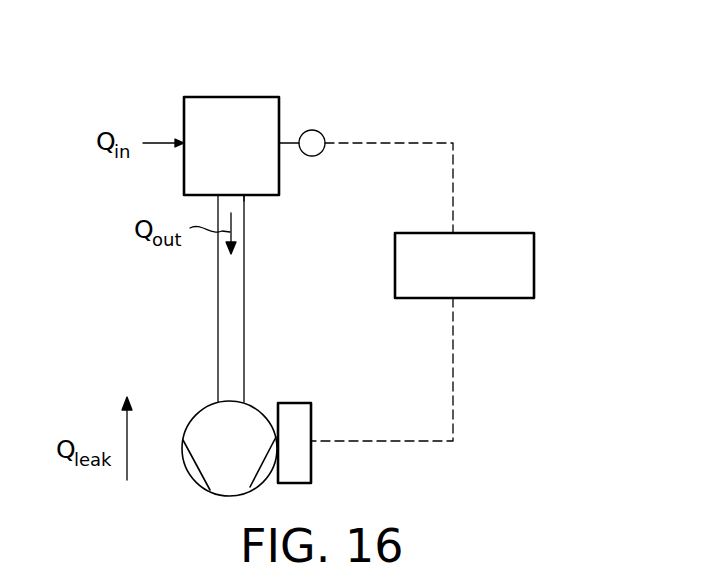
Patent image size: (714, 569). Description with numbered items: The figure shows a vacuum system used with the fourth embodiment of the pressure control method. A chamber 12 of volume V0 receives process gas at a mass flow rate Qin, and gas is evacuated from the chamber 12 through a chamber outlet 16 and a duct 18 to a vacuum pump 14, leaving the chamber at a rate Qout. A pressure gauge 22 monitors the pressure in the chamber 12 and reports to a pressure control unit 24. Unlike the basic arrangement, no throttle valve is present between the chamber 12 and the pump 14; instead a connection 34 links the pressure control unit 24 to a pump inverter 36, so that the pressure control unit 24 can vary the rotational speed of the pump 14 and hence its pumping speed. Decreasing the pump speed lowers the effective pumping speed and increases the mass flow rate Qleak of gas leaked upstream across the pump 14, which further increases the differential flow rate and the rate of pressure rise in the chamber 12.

The chamber 12 is at (229, 97).
The vacuum pump 14 is at (192, 473).
The chamber outlet 16 is at (256, 196).
The duct 18 is at (244, 305).
The pressure gauge 22 is at (321, 133).
The pressure control unit 24 is at (536, 265).
The connection 34 is at (455, 378).
The pump inverter 36 is at (312, 459).